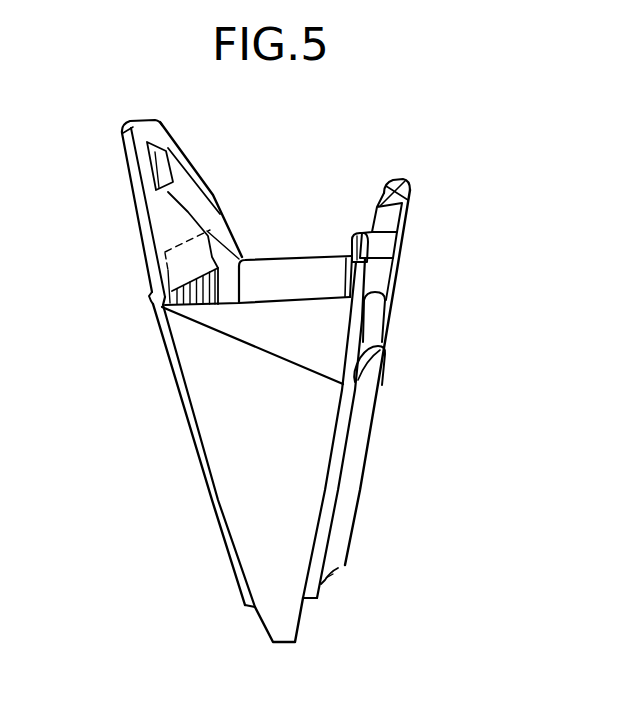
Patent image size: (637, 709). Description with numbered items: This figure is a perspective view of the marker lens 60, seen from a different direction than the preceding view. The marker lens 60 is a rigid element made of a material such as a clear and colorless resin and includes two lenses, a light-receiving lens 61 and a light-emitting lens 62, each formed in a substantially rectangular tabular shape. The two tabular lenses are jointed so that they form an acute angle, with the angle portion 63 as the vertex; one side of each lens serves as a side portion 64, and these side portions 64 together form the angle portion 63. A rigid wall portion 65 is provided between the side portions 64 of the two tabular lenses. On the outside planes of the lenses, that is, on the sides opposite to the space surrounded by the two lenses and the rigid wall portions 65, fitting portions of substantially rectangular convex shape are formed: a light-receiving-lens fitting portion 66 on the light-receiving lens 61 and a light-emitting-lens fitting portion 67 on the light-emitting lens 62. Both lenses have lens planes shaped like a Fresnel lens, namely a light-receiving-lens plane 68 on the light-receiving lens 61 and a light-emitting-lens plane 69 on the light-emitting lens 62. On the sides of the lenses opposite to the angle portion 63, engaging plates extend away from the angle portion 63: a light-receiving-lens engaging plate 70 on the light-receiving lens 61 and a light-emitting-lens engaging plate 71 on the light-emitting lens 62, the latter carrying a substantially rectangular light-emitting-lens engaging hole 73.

The marker lens 60 is at (324, 152).
The light-receiving lens 61 is at (380, 394).
The light-emitting lens 62 is at (182, 412).
The angle portion 63 is at (286, 644).
The side portions 64 is at (262, 620).
The rigid wall portion 65 is at (324, 272).
The light-receiving-lens fitting portion 66 is at (373, 409).
The light-emitting-lens fitting portion 67 is at (197, 472).
The light-receiving-lens plane 68 is at (352, 470).
The light-emitting-lens plane 69 is at (218, 289).
The light-receiving-lens engaging plate 70 is at (398, 177).
The light-emitting-lens engaging plate 71 is at (138, 220).
The light-emitting-lens engaging hole 73 is at (162, 165).